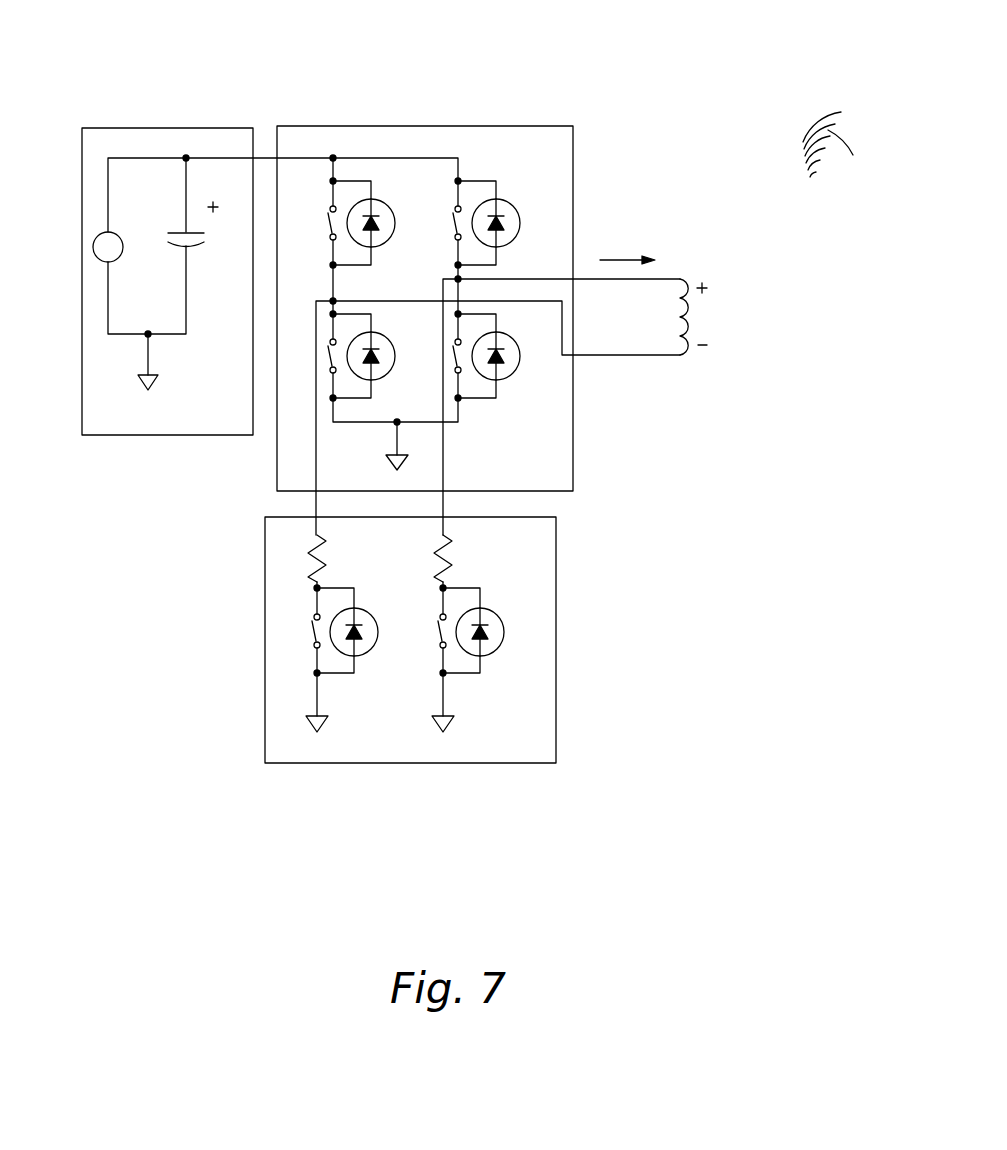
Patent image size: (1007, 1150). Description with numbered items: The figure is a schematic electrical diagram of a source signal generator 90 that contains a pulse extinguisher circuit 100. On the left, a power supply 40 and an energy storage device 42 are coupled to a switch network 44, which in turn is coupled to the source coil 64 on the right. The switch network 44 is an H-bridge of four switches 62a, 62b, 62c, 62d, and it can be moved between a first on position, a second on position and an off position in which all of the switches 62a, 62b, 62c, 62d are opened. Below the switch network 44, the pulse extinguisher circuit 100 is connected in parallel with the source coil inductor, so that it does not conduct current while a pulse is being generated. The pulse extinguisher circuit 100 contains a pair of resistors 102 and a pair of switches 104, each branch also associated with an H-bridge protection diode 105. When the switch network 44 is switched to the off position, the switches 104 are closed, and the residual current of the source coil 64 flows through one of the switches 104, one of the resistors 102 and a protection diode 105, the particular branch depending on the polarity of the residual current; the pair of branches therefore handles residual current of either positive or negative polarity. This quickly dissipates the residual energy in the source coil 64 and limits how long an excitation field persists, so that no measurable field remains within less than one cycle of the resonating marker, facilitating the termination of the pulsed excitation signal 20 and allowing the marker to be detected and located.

The pulsed excitation signal 20 is at (828, 130).
The power supply 40 is at (93, 245).
The energy storage device 42 is at (181, 231).
The switch network 44 is at (486, 123).
The switch 62a is at (328, 213).
The switch 62b is at (453, 213).
The switch 62c is at (328, 346).
The switch 62d is at (453, 346).
The source coil 64 is at (694, 188).
The source signal generator 90 is at (629, 60).
The pulse extinguisher circuit 100 is at (557, 542).
The resistor 102 is at (325, 558).
The switch 104 is at (312, 640).
The H-bridge protection diode 105 is at (369, 615).